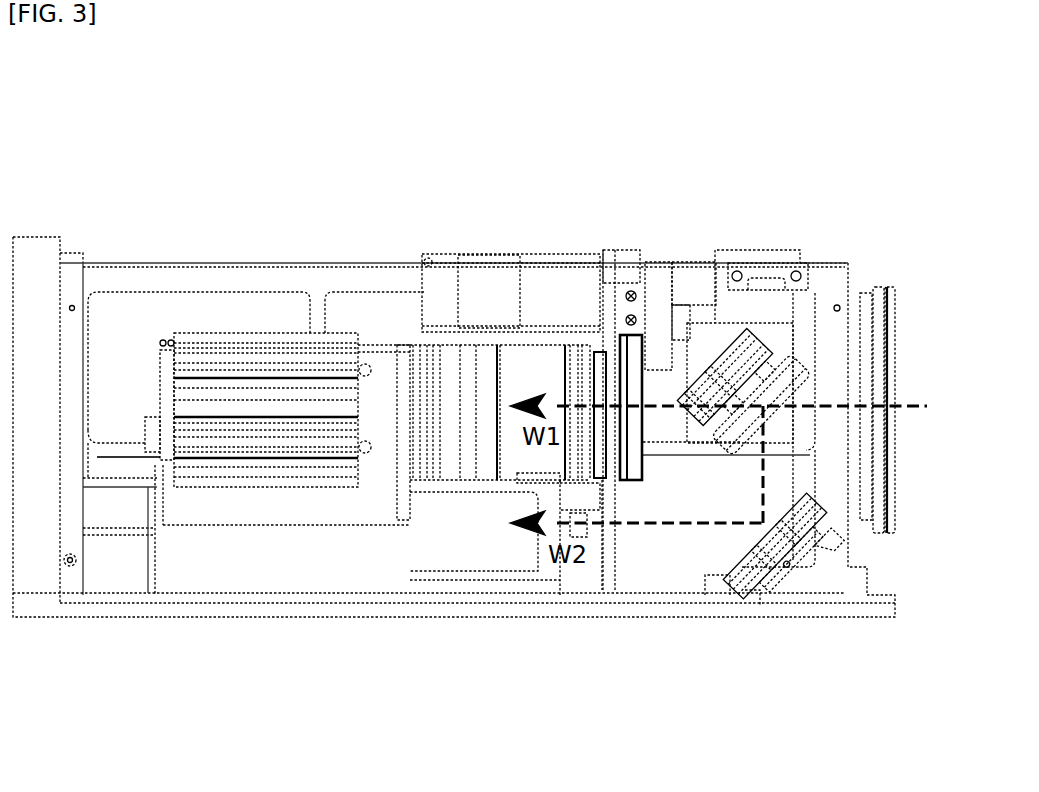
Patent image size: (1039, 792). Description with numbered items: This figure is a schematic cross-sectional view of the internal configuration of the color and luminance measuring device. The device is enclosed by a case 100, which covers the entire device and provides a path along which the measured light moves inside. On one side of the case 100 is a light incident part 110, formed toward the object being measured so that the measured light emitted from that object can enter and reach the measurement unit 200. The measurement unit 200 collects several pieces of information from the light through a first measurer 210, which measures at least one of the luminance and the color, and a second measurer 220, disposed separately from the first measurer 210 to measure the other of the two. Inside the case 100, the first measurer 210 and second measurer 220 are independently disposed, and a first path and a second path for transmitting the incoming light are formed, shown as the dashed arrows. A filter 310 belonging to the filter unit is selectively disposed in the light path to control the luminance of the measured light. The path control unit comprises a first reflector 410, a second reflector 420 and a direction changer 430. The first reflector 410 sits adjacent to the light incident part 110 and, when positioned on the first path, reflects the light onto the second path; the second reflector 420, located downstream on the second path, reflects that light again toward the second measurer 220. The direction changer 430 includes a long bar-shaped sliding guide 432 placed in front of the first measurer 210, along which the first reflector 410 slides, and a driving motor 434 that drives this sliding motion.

The case 100 is at (321, 228).
The light incident part 110 is at (878, 287).
The measurement unit 200 is at (530, 682).
The first measurer 210 is at (485, 452).
The second measurer 220 is at (438, 542).
The filter 310 is at (640, 468).
The first reflector 410 is at (722, 430).
The second reflector 420 is at (786, 518).
The direction changer 430 is at (762, 174).
The sliding guide 432 is at (762, 285).
The driving motor 434 is at (555, 268).